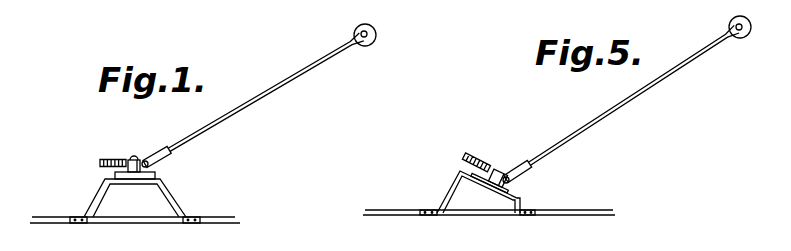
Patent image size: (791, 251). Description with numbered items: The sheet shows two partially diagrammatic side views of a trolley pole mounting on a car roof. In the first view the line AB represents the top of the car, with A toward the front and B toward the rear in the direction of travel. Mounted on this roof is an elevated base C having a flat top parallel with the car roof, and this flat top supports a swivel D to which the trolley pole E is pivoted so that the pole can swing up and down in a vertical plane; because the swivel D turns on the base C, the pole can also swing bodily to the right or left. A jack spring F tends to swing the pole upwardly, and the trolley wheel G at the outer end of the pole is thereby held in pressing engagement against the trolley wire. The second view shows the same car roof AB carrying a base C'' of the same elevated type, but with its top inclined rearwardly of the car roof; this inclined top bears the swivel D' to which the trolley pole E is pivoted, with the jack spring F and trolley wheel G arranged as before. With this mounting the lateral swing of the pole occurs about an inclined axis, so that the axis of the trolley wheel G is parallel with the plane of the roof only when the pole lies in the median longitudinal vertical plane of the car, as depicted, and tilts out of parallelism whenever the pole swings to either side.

In FIG. 1, the front end of car top A is at (123, 218).
In FIG. 5, the front end of car top A is at (479, 215).
In FIG. 1, the rear end of car top B is at (164, 215).
In FIG. 5, the rear end of car top B is at (527, 208).
In FIG. 1, the elevated base C is at (146, 194).
In FIG. 5, the elevated base with rearwardly inclined top C'' is at (466, 192).
In FIG. 1, the swivel D is at (102, 171).
In FIG. 5, the swivel on inclined base D' is at (508, 159).
In FIG. 1, the trolley pole E is at (270, 92).
In FIG. 5, the trolley pole E is at (628, 100).
In FIG. 1, the jack spring F is at (118, 159).
In FIG. 5, the jack spring F is at (481, 157).
In FIG. 1, the trolley wheel G is at (377, 41).
In FIG. 5, the trolley wheel G is at (742, 38).